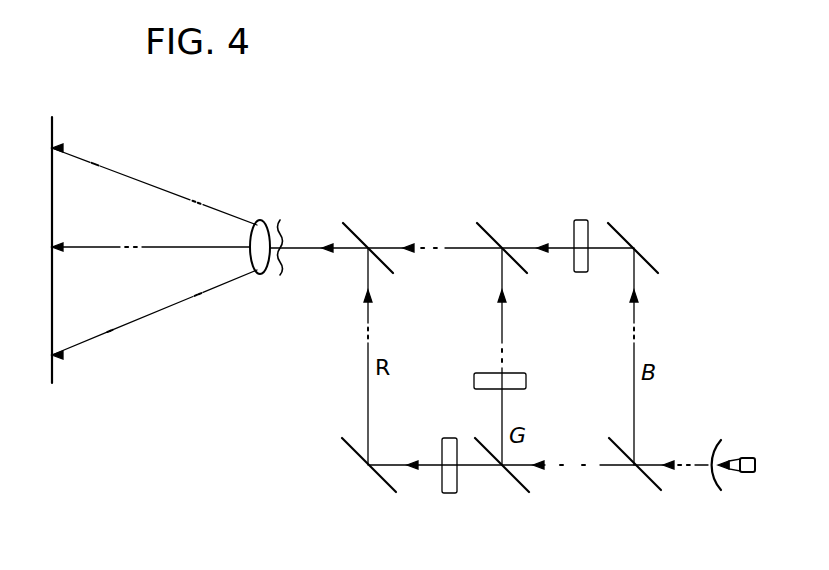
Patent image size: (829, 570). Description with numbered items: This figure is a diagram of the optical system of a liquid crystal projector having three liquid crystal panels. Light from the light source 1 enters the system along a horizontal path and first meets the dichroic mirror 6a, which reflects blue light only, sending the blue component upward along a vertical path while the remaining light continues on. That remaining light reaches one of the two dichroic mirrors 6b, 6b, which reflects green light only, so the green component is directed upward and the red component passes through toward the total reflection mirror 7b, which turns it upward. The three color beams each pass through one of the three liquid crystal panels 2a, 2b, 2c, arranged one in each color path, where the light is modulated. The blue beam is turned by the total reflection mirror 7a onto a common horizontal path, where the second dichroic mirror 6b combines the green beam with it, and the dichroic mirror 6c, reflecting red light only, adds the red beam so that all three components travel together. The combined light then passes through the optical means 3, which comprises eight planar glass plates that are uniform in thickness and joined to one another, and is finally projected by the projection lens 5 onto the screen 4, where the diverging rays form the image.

The light source 1 is at (712, 445).
The liquid crystal panel 2a is at (582, 220).
The liquid crystal panel 2b is at (526, 374).
The liquid crystal panel 2c is at (445, 438).
The optical means 3 is at (285, 222).
The screen 4 is at (53, 132).
The projection lens 5 is at (262, 220).
The dichroic mirror 6a is at (648, 483).
The dichroic mirror 6b is at (486, 236).
The dichroic mirror 6c is at (360, 232).
The total reflection mirror 7a is at (638, 240).
The total reflection mirror 7b is at (367, 474).